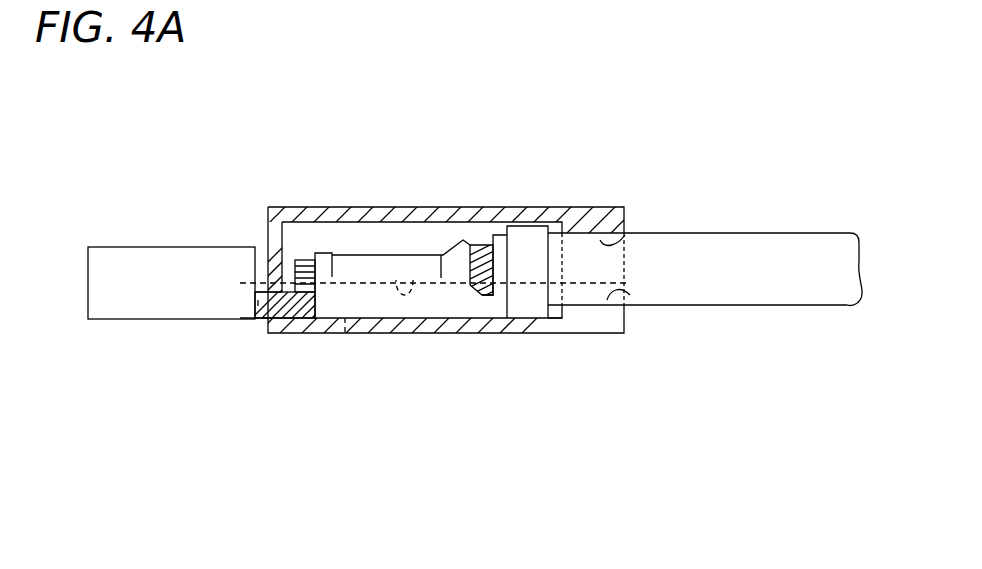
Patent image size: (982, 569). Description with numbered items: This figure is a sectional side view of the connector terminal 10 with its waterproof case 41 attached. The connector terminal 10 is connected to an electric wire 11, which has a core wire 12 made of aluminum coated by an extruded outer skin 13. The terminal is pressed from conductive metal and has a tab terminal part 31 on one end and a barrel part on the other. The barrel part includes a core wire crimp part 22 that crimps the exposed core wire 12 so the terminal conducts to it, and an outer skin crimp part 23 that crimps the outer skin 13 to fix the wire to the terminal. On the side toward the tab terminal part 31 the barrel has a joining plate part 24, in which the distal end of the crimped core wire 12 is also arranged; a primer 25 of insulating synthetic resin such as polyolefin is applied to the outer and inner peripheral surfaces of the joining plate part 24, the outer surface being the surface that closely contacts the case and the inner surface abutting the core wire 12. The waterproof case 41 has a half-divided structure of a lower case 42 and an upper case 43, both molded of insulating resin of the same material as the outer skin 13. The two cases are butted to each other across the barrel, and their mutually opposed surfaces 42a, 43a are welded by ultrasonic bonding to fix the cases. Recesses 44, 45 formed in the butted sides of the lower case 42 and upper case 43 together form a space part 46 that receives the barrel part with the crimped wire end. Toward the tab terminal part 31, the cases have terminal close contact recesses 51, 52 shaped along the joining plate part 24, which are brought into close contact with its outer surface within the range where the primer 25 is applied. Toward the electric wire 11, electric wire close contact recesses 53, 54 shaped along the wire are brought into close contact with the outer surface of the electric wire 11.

The connector terminal 10 is at (238, 220).
The electric wire 11 is at (818, 229).
The core wire 12 is at (471, 245).
The outer skin 13 is at (757, 243).
The core wire crimp part 22 is at (358, 230).
The outer skin crimp part 23 is at (523, 226).
The joining plate part 24 is at (290, 320).
The primer 25 is at (258, 303).
The tab terminal part 31 is at (126, 244).
The waterproof case 41 is at (566, 186).
The lower case 42 is at (606, 333).
The opposed surface 42a is at (358, 280).
The upper case 43 is at (600, 207).
The opposed surface 43a is at (413, 280).
The recess 44 is at (553, 333).
The recess 45 is at (283, 243).
The space part 46 is at (388, 235).
The terminal close contact recess 51 is at (266, 318).
The terminal close contact recess 52 is at (258, 297).
The electric wire close contact recess 53 is at (630, 295).
The electric wire close contact recess 54 is at (625, 235).